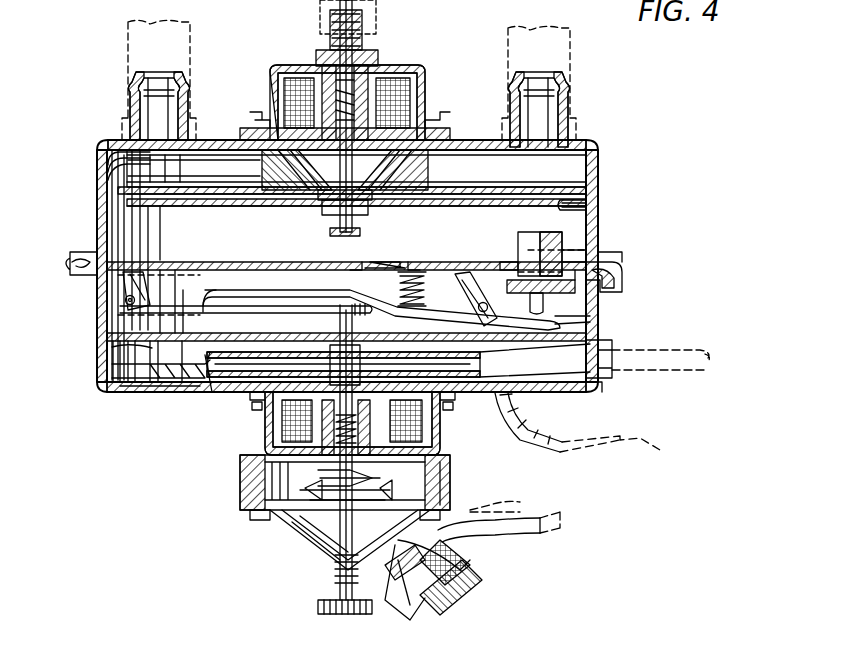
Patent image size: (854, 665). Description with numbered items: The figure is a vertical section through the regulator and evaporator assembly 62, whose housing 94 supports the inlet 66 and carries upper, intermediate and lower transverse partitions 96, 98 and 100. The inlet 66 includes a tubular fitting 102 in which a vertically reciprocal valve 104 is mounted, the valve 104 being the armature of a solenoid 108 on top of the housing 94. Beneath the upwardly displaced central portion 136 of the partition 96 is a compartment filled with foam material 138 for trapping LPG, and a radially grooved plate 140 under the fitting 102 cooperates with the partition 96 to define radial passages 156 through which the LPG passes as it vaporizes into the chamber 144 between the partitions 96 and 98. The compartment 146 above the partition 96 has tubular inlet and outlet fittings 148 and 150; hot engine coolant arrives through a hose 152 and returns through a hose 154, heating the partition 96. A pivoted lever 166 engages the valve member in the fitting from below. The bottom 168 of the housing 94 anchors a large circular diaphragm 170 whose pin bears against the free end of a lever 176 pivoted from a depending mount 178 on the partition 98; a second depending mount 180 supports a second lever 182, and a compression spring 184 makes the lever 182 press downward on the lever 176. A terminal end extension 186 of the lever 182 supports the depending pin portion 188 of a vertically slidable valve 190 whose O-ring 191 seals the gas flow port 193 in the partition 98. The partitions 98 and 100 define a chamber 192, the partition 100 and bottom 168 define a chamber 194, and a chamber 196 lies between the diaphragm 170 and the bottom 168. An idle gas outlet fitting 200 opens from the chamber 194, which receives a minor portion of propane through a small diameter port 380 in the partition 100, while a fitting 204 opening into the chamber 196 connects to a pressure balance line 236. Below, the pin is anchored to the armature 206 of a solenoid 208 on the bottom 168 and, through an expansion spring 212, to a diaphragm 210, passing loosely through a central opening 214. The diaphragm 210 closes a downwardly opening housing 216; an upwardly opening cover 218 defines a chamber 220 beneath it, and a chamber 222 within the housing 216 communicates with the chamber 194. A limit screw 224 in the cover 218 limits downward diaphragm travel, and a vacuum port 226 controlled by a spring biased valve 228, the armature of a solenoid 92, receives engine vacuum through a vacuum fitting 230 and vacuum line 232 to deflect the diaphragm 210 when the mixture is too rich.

The regulator and evaporator assembly 62 is at (613, 166).
The inlet 66 is at (370, 58).
The solenoid 92 is at (478, 570).
The housing 94 is at (97, 203).
The upper transverse partition 96 is at (150, 180).
The intermediate transverse partition 98 is at (452, 272).
The lower transverse partition 100 is at (150, 358).
The tubular fitting 102 is at (278, 84).
The vertically reciprocal valve 104 is at (400, 120).
The solenoid 108 is at (426, 70).
The upwardly displaced central portion 136 is at (270, 170).
The foam material 138 is at (425, 181).
The radially grooved plate 140 is at (146, 215).
The chamber 144 is at (176, 233).
The compartment 146 is at (352, 178).
The tubular inlet fitting 148 is at (140, 110).
The tubular outlet fitting 150 is at (572, 118).
The pipe or hose 152 is at (128, 40).
The pipe or hose 154 is at (575, 64).
The radial passages 156 is at (592, 210).
The pivoted lever 166 is at (330, 233).
The bottom 168 is at (150, 393).
The large circular diaphragm 170 is at (496, 366).
The lever 176 is at (228, 295).
The depending mount 178 is at (122, 305).
The second depending mount 180 is at (458, 272).
The second lever 182 is at (262, 303).
The compression spring 184 is at (400, 300).
The terminal end extension 186 is at (592, 321).
The depending pin portion 188 is at (592, 303).
The vertically slidable valve 190 is at (590, 228).
The O-ring 191 is at (500, 272).
The chamber 192 is at (161, 295).
The gas flow port 193 is at (598, 262).
The chamber 194 is at (150, 370).
The chamber 196 is at (205, 391).
The idle gas outlet fitting 200 is at (600, 396).
The fitting 204 is at (562, 452).
The armature 206 is at (428, 430).
The solenoid 208 is at (270, 447).
The diaphragm 210 is at (284, 522).
The expansion spring 212 is at (300, 486).
The central opening 214 is at (275, 426).
The downwardly opening housing 216 is at (250, 483).
The upwardly opening cover 218 is at (310, 560).
The chamber 220 is at (325, 547).
The chamber 222 is at (420, 492).
The limit screw 224 is at (318, 608).
The vacuum port 226 is at (442, 488).
The spring biased valve 228 is at (478, 586).
The vacuum fitting 230 is at (512, 540).
The vacuum line 232 is at (530, 518).
The pressure balance line 236 is at (590, 458).
The small diameter port 380 is at (612, 358).